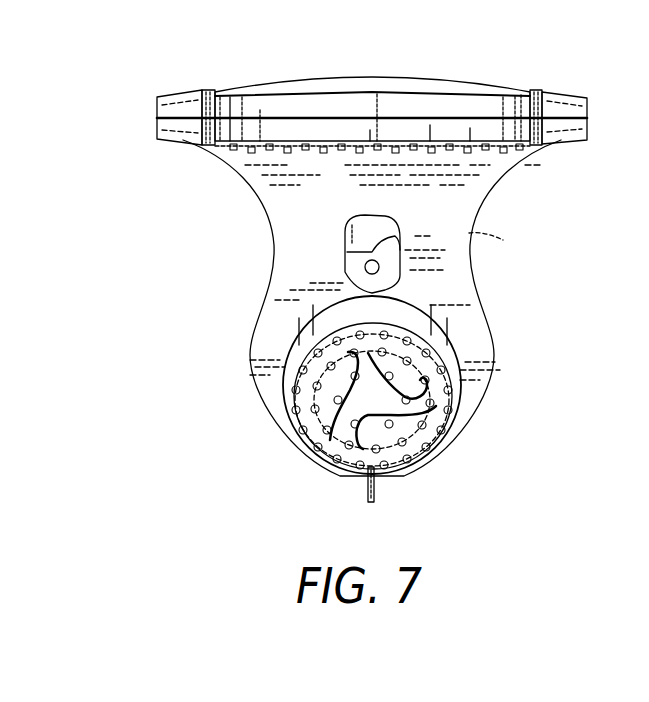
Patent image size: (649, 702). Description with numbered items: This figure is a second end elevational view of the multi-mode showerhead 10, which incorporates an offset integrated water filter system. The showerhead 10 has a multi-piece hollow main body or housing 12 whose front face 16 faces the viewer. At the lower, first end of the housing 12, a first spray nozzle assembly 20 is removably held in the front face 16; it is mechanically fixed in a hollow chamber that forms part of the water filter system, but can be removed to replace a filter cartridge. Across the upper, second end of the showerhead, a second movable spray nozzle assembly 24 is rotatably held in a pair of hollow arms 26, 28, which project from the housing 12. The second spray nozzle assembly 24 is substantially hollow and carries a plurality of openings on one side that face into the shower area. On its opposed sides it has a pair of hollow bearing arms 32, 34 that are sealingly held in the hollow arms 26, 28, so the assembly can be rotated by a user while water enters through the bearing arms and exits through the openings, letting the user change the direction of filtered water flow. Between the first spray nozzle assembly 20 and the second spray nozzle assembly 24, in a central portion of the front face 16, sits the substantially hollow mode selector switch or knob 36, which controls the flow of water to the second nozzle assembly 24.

The multi-mode showerhead 10 is at (362, 272).
The main body or housing 12 is at (483, 312).
The front face 16 is at (383, 243).
The first spray nozzle assembly 20 is at (413, 472).
The second movable spray nozzle assembly 24 is at (380, 92).
The hollow arm 26 is at (178, 135).
The hollow arm 28 is at (565, 133).
The hollow bearing arm 32 is at (208, 112).
The hollow bearing arm 34 is at (537, 105).
The mode selector switch or knob 36 is at (502, 242).